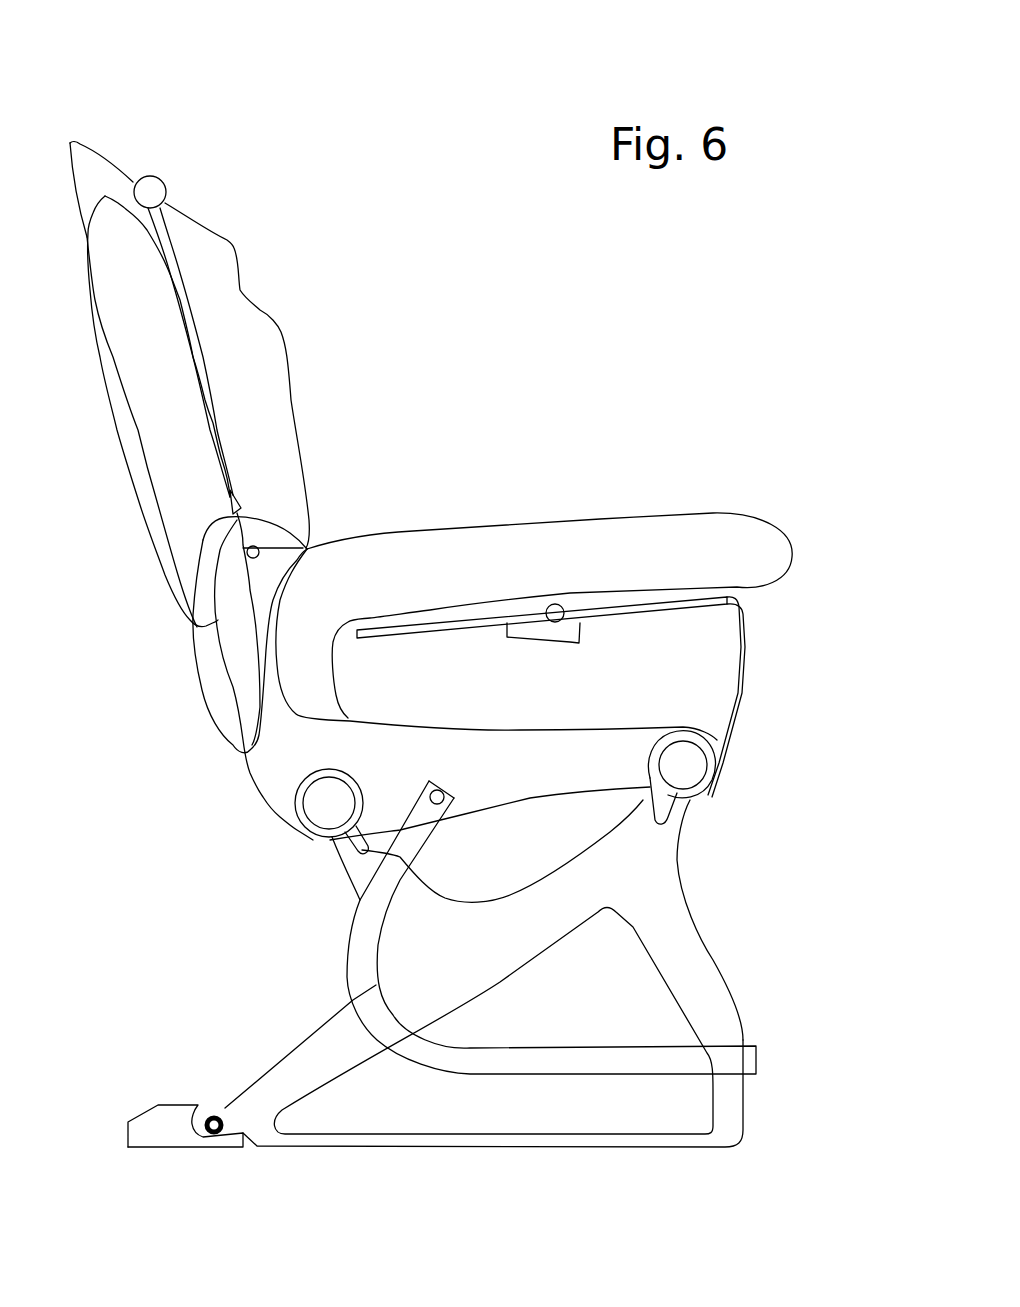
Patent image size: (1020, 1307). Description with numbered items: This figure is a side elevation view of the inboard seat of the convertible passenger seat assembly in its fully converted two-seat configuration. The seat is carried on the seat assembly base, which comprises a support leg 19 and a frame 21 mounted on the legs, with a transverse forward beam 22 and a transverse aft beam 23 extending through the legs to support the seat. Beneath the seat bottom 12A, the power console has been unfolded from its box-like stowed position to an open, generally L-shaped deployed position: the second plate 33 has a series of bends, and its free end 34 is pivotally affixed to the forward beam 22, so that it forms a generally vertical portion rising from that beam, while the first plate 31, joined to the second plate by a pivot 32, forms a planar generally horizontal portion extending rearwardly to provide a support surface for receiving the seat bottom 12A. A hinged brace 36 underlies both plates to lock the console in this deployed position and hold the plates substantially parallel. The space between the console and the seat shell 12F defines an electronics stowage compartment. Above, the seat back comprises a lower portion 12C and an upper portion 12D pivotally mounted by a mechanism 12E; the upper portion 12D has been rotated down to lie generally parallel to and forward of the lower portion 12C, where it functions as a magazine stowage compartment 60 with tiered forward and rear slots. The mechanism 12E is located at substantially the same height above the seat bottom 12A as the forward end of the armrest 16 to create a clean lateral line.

The magazine stowage compartment 60 is at (264, 180).
The seat bottom 12A is at (715, 532).
The lower portion 12C is at (86, 167).
The upper portion 12D is at (266, 424).
The mechanism 12E is at (152, 190).
The seat shell 12F is at (275, 766).
The armrest 16 is at (100, 378).
The support leg 19 is at (268, 1076).
The frame 21 is at (362, 973).
The forward beam 22 is at (693, 764).
The aft beam 23 is at (328, 803).
The first plate 31 is at (432, 640).
The pivot 32 is at (552, 605).
The second plate 33 is at (745, 657).
The free end 34 is at (697, 803).
The hinged brace 36 is at (544, 646).